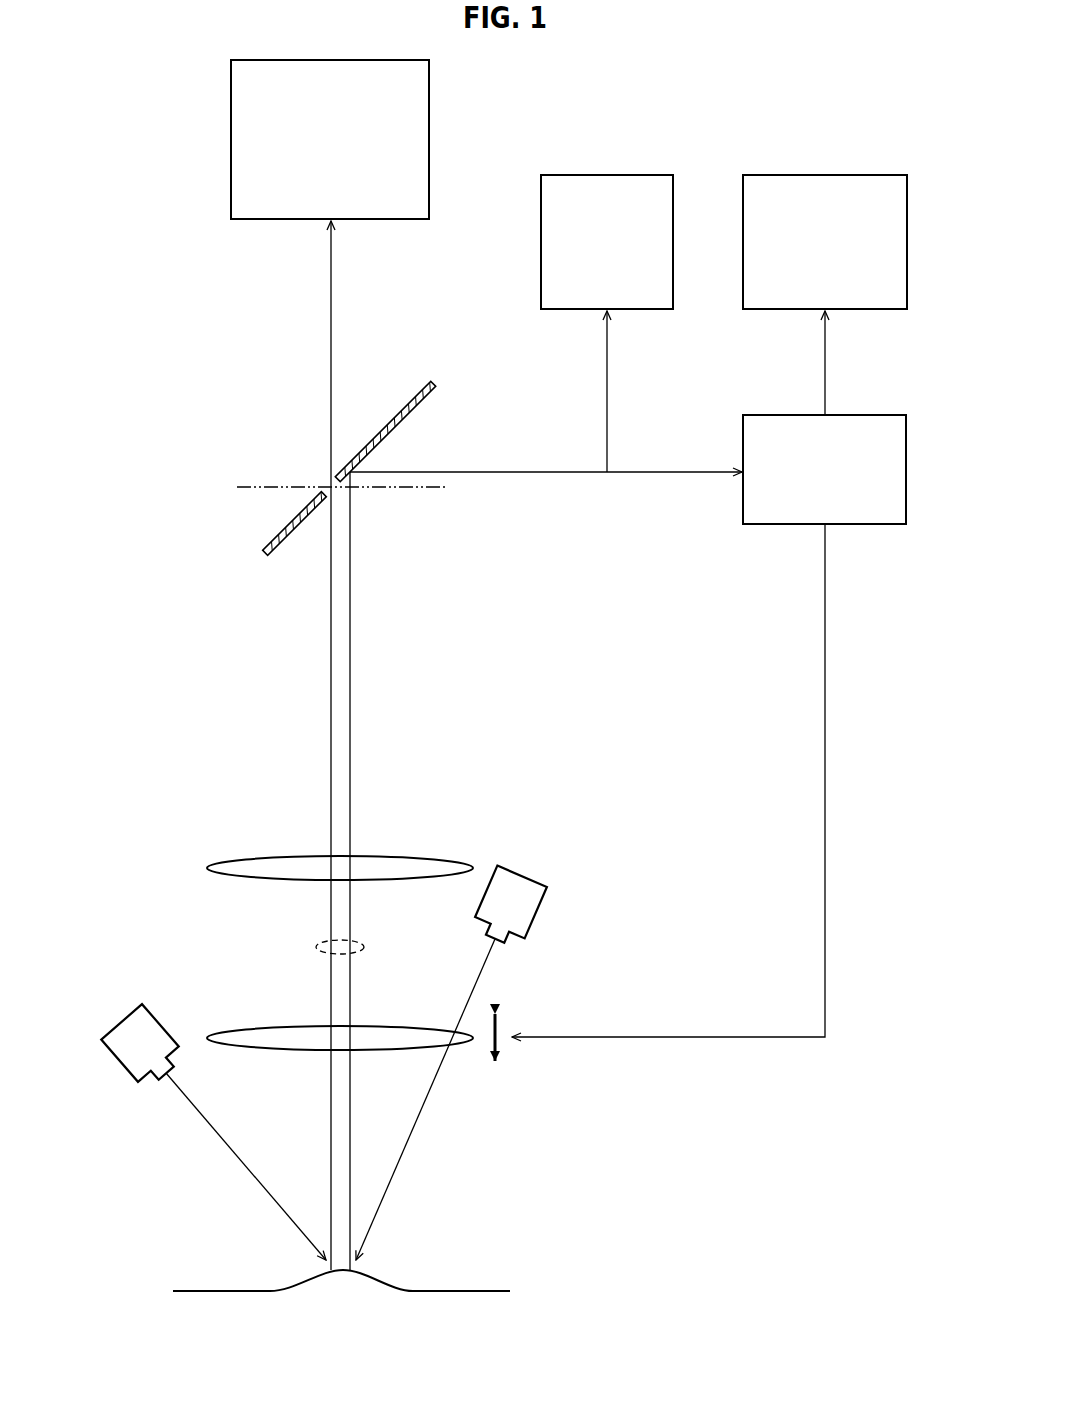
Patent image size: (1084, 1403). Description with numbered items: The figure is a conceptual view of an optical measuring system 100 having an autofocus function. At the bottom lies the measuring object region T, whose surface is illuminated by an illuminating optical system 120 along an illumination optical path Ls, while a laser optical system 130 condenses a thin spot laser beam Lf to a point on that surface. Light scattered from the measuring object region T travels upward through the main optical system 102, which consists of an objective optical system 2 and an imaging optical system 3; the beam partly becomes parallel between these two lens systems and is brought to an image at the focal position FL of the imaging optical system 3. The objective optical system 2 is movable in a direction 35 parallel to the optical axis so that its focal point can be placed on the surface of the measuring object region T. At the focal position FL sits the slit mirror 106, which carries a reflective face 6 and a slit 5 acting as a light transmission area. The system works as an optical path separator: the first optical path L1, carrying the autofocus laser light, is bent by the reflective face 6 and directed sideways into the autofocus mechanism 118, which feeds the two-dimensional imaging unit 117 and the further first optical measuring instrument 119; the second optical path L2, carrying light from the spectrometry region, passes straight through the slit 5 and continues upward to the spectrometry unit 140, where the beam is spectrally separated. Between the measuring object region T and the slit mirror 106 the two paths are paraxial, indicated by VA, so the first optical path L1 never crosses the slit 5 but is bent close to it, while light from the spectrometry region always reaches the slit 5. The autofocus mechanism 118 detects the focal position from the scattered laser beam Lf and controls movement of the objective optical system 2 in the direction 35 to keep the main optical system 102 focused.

The optical measuring system 100 is at (193, 370).
The spectrometry unit 140 is at (430, 135).
The two-dimensional imaging unit 117 is at (606, 175).
The first optical measuring instrument 119 is at (825, 175).
The autofocus mechanism 118 is at (863, 415).
The slit mirror 106 is at (367, 424).
The reflective face 6 is at (424, 392).
The slit 5 is at (334, 490).
The main optical system 102 is at (296, 953).
The imaging optical system 3 is at (252, 879).
The objective optical system 2 is at (328, 1015).
The laser optical system 130 is at (543, 905).
The illuminating optical system 120 is at (124, 1075).
The direction 35 is at (500, 1012).
The focal position FL is at (325, 488).
The first optical path L1 is at (353, 676).
The second optical path L2 is at (330, 676).
The illumination optical path Ls is at (244, 1168).
The laser beam Lf is at (406, 1149).
The paraxial region VA is at (366, 940).
The measuring object region T is at (392, 1260).